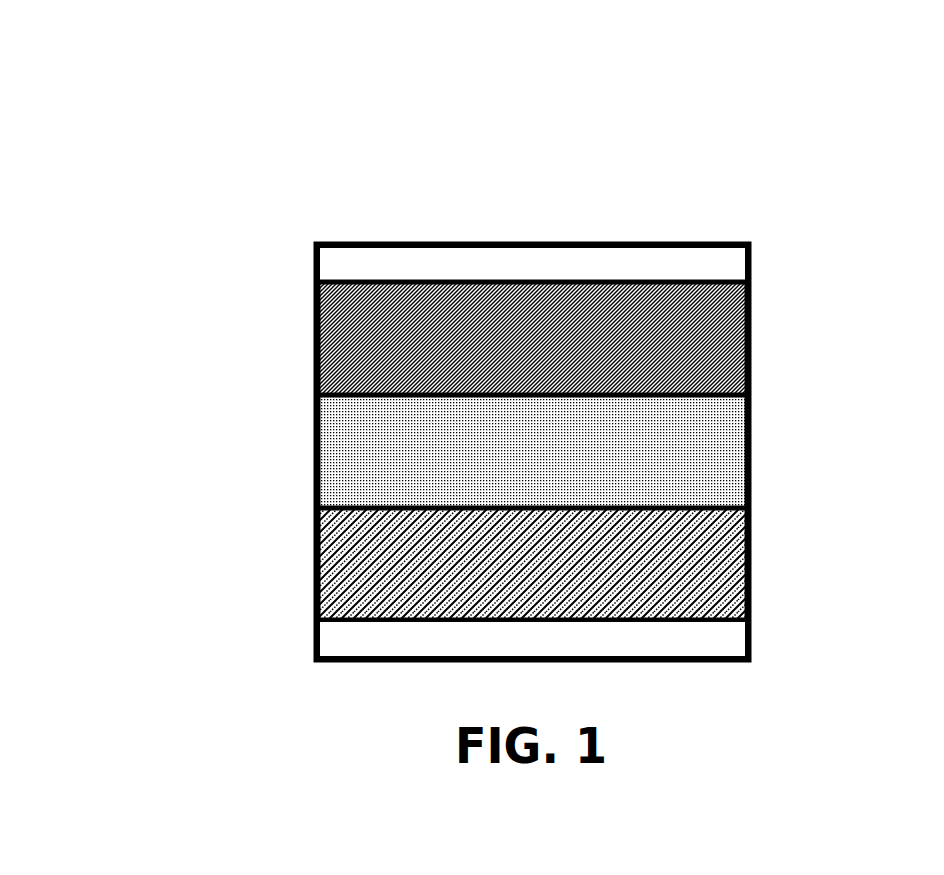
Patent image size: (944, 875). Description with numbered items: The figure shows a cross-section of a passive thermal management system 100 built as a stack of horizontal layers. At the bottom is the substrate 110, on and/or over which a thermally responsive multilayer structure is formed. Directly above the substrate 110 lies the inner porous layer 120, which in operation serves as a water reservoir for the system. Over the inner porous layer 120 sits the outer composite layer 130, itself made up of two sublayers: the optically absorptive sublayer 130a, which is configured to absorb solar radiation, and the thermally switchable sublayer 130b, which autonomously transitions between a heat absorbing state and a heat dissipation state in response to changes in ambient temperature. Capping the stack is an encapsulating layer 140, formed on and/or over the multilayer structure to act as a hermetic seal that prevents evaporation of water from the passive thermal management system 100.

The passive thermal management system 100 is at (88, 108).
The substrate 110 is at (313, 640).
The inner porous layer 120 is at (313, 565).
The outer composite layer 130 is at (529, 380).
The optically absorptive sublayer 130a is at (313, 450).
The thermally switchable sublayer 130b is at (313, 340).
The encapsulating layer 140 is at (313, 265).